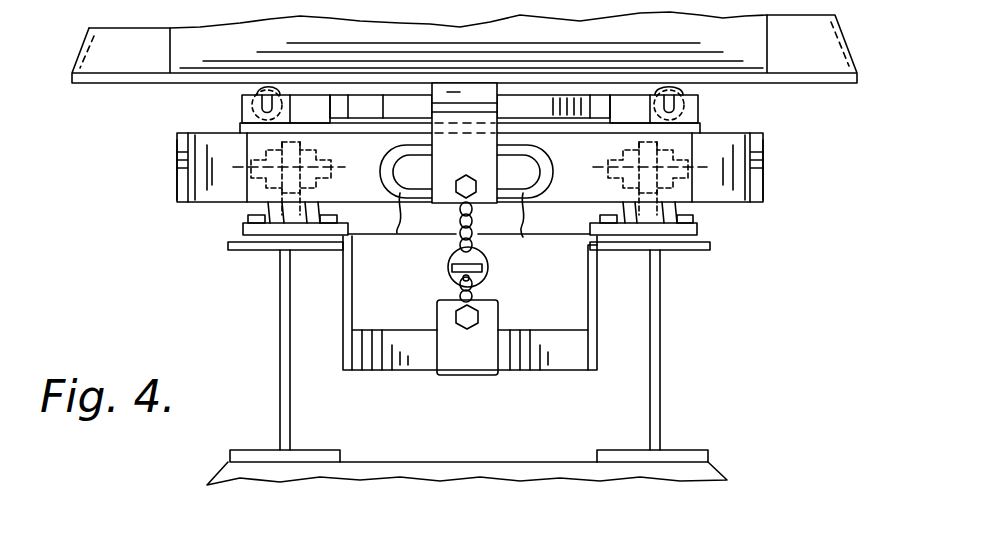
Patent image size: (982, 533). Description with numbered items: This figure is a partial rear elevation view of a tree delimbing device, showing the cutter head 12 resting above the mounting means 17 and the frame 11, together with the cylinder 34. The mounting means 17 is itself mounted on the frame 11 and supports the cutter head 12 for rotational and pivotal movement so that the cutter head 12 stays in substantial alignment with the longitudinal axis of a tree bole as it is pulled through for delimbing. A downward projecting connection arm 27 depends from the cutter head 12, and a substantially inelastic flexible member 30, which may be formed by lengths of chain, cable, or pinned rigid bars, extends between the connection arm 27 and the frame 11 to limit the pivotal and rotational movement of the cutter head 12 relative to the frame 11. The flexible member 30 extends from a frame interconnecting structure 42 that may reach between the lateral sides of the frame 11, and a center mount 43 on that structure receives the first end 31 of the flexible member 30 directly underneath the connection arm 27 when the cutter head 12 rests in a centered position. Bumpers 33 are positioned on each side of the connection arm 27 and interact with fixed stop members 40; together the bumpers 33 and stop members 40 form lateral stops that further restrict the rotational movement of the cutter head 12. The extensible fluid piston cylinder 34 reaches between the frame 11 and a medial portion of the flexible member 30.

The cutter head 12 is at (142, 60).
The connection arm 27 is at (478, 100).
The fixed stop members 40 is at (177, 172).
The mounting means 17 is at (240, 218).
The frame 11 is at (275, 318).
The bumpers 33 is at (458, 233).
The flexible member 30 is at (445, 278).
The first end 31 is at (487, 290).
The fluid piston cylinder 34 is at (448, 290).
The frame interconnecting structure 42 is at (382, 357).
The center mount 43 is at (452, 357).